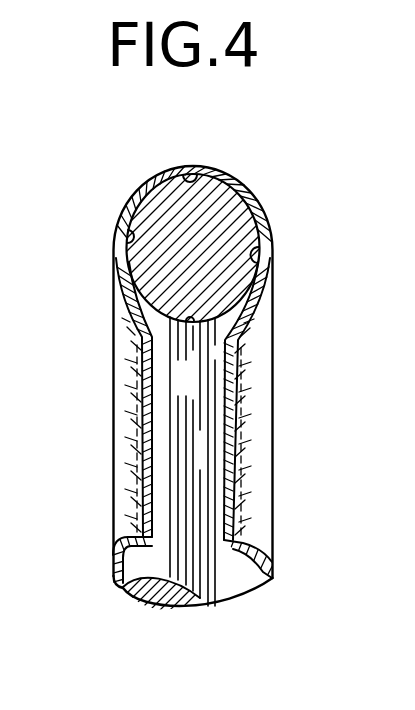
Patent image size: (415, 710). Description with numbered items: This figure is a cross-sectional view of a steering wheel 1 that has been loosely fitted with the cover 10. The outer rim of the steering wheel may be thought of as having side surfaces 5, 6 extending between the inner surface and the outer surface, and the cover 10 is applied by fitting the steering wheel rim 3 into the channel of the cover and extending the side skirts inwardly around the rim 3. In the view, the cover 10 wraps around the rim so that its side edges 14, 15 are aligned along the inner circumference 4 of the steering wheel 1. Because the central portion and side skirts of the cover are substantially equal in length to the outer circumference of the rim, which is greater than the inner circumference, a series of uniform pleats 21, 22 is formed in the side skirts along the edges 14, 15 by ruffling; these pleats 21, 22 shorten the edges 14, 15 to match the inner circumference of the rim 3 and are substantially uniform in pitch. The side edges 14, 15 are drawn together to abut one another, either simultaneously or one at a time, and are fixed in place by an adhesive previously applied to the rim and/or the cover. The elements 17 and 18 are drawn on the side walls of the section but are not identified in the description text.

The steering wheel 1 is at (233, 216).
The steering wheel rim 3 is at (191, 167).
The inner circumference 4 is at (190, 326).
The side surface 5 is at (127, 231).
The side surface 6 is at (262, 259).
The cover 10 is at (137, 192).
The side edge 14 is at (143, 513).
The side edge 15 is at (237, 527).
The left thin wall 17 is at (132, 390).
The right thin wall 18 is at (245, 390).
The pleats 21 is at (130, 448).
The pleats 22 is at (247, 453).